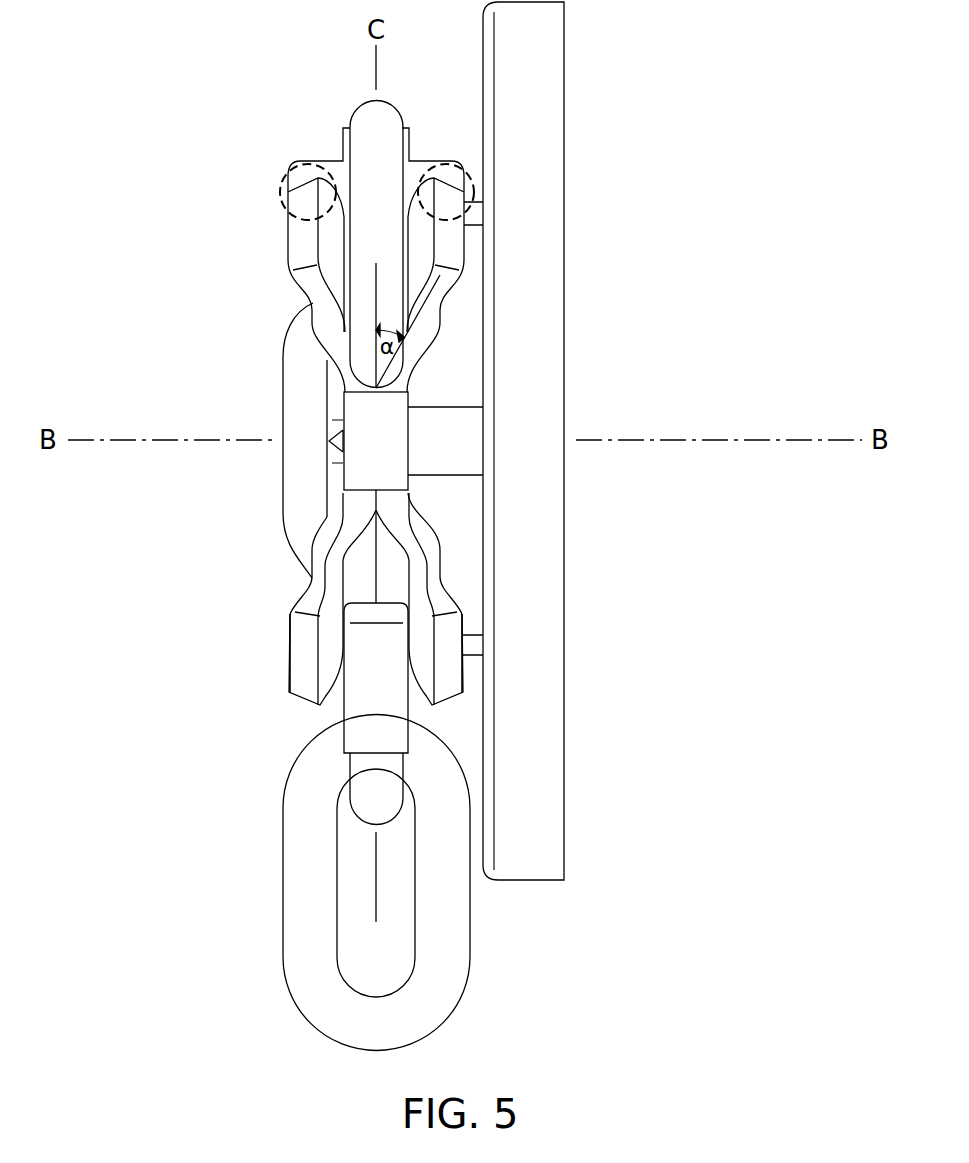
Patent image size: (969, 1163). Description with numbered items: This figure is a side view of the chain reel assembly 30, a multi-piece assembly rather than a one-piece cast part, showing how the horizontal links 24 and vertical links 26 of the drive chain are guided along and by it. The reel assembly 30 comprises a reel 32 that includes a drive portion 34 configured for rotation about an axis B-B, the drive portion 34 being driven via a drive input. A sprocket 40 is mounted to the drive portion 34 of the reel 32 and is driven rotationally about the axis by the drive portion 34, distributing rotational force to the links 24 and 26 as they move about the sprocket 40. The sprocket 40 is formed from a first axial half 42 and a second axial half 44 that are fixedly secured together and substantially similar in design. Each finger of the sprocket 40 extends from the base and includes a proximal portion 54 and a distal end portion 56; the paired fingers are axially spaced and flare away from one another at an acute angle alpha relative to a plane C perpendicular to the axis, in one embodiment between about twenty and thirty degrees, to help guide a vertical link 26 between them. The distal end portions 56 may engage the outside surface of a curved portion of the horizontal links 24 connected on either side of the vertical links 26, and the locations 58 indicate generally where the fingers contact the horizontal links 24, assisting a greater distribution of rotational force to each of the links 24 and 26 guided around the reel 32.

The chain reel assembly 30 is at (237, 110).
The vertical link 26 is at (385, 117).
The horizontal link 24 is at (420, 163).
The reel 32 is at (550, 86).
The contact location 58 is at (287, 203).
The sprocket 40 is at (280, 274).
The drive portion 34 is at (465, 430).
The proximal portion 54 is at (318, 533).
The distal end portion 56 is at (288, 640).
The first axial half 42 is at (300, 707).
The second axial half 44 is at (452, 707).